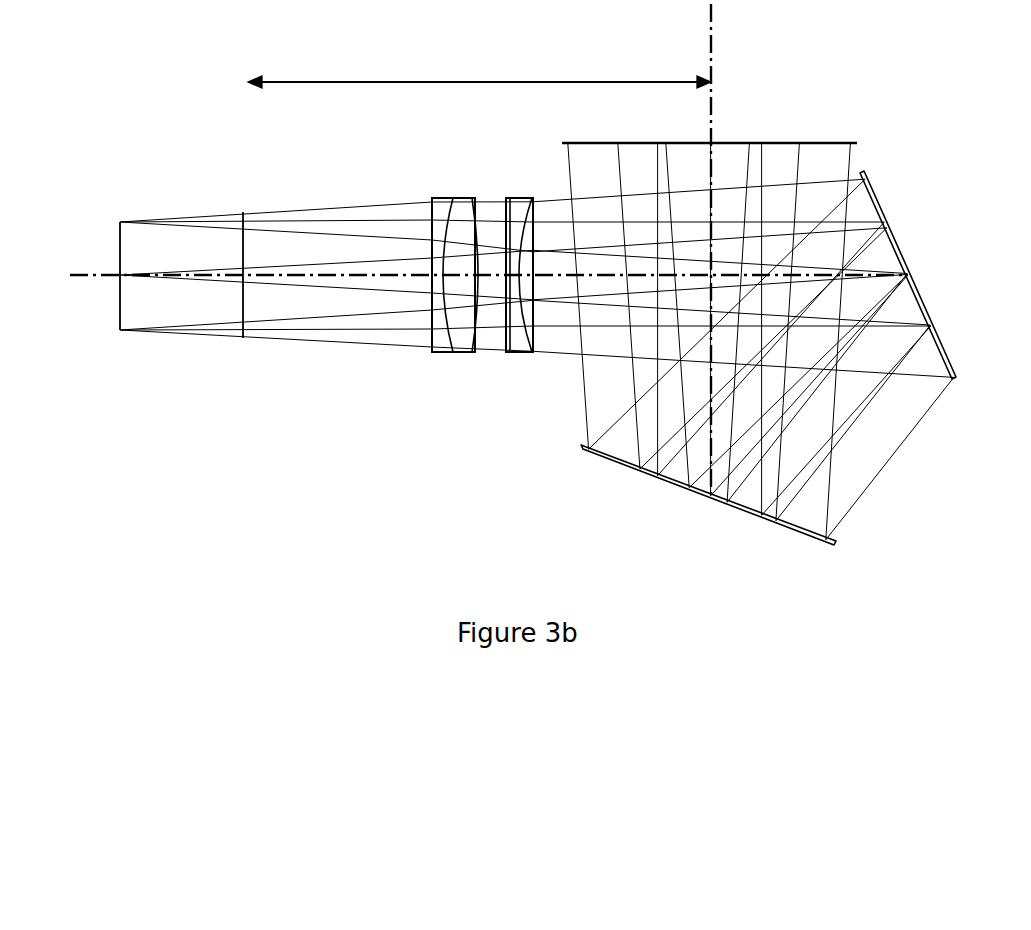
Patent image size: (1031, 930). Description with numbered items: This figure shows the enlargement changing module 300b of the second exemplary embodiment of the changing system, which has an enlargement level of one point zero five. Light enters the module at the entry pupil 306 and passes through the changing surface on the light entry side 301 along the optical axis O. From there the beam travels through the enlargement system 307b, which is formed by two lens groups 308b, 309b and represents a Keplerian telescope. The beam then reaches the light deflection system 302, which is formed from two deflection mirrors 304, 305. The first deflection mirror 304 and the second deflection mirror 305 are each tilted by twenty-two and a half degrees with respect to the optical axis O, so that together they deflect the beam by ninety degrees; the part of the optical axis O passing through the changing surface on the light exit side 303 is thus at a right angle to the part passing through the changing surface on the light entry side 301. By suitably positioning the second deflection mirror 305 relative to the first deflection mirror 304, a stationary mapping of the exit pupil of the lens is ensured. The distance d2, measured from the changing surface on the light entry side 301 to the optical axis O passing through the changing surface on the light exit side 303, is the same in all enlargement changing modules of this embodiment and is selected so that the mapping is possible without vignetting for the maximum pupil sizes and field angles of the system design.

The enlargement changing module 300b is at (153, 137).
The changing surface on the light entry side 301 is at (243, 246).
The light deflection system 302 is at (943, 463).
The changing surface on the light exit side 303 is at (830, 143).
The first deflection mirror 304 is at (935, 332).
The second deflection mirror 305 is at (662, 482).
The entry pupil 306 is at (118, 244).
The enlargement system 307b is at (448, 291).
The first lens group 308b is at (452, 354).
The second lens group 309b is at (527, 354).
The optical axis O is at (72, 278).
The distance d2 is at (479, 67).